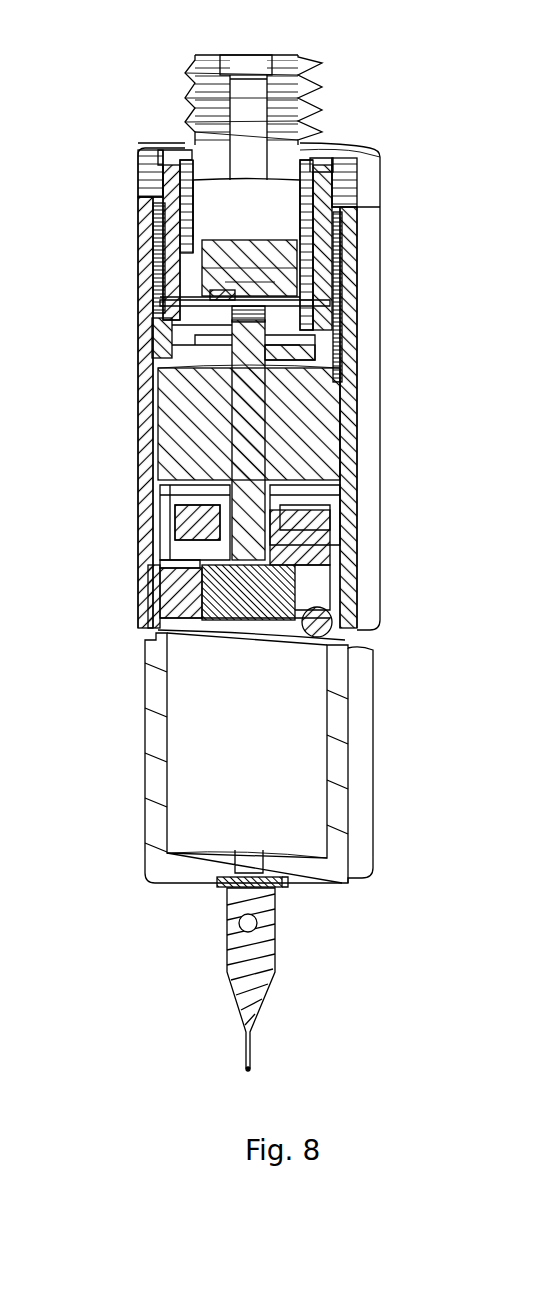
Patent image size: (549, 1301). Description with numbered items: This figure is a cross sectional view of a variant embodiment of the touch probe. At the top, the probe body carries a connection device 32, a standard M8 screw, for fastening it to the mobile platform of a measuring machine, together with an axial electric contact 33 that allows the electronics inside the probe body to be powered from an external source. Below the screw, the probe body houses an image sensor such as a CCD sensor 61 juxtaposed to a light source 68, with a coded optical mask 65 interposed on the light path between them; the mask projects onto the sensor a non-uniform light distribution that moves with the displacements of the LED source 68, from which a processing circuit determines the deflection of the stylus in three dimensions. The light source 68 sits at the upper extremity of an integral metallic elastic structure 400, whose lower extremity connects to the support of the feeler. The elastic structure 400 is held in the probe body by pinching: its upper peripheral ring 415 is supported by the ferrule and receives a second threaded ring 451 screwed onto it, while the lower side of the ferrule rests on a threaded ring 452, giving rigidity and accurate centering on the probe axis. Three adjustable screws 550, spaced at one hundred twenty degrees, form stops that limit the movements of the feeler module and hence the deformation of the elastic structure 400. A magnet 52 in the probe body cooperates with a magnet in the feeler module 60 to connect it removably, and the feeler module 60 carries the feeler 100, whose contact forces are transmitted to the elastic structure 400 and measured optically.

The connection device 32 is at (320, 88).
The axial electric contact 33 is at (248, 63).
The CCD sensor 61 is at (275, 257).
The coded optical mask 65 is at (160, 297).
The light source 68 is at (285, 297).
The upper peripheral ring 415 is at (167, 335).
The second threaded ring 451 is at (160, 262).
The threaded ring 452 is at (148, 586).
The elastic structure 400 is at (162, 428).
The screws 550 is at (176, 548).
The magnet 52 is at (285, 592).
The feeler module 60 is at (155, 817).
The feeler 100 is at (252, 1010).